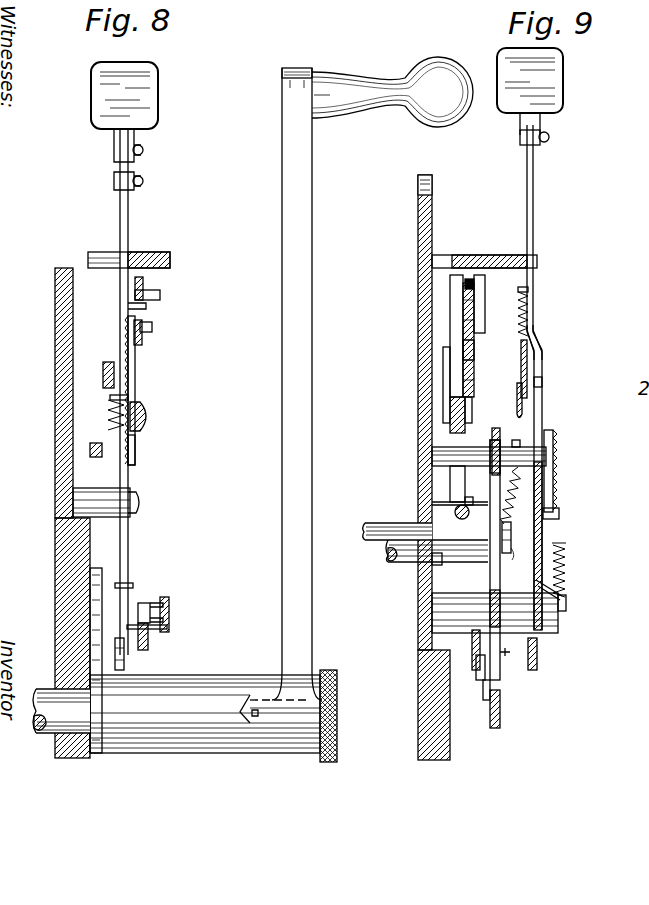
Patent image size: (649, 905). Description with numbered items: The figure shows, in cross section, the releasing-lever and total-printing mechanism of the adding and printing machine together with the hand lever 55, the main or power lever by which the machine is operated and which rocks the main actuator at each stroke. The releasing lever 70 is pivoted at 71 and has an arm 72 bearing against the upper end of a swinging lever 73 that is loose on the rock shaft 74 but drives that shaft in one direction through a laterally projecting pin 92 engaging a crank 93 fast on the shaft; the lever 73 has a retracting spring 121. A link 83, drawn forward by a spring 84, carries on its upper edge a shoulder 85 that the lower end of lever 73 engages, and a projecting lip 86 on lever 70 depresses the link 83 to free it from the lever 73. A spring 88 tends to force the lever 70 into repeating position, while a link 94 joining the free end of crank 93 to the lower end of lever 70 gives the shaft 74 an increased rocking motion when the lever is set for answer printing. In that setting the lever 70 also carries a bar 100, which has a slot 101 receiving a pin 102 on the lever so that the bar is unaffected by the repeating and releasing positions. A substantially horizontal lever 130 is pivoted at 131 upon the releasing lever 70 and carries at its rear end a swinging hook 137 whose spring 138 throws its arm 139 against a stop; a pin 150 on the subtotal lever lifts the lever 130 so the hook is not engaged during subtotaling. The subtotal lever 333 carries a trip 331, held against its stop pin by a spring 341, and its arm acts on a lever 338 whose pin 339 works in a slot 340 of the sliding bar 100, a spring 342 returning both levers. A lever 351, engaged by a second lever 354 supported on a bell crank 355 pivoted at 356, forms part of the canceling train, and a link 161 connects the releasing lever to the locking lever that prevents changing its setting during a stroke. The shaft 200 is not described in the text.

In FIG. 8, the hand lever 55 is at (372, 378).
In FIG. 8, the releasing lever 70 is at (129, 216).
In FIG. 8, the pivot 71 is at (142, 506).
In FIG. 9, the arm 72 is at (501, 442).
In FIG. 9, the swinging lever 73 is at (497, 482).
In FIG. 9, the rock shaft 74 is at (509, 548).
In FIG. 8, the link 83 is at (149, 648).
In FIG. 9, the link 83 is at (502, 715).
In FIG. 8, the spring 84 is at (145, 607).
In FIG. 9, the shoulder 85 is at (486, 700).
In FIG. 8, the projecting lip 86 is at (160, 631).
In FIG. 8, the spring 88 is at (131, 585).
In FIG. 9, the laterally projecting pin 92 is at (477, 606).
In FIG. 9, the crank 93 is at (485, 563).
In FIG. 8, the link 94 is at (117, 640).
In FIG. 9, the link 94 is at (479, 678).
In FIG. 8, the bar 100 is at (144, 278).
In FIG. 8, the slot 101 is at (147, 305).
In FIG. 8, the pin 102 is at (161, 296).
In FIG. 9, the retracting spring 121 is at (510, 654).
In FIG. 8, the lever 130 is at (137, 443).
In FIG. 8, the pivot 131 is at (150, 428).
In FIG. 9, the pivot 131 is at (517, 390).
In FIG. 9, the swinging hook 137 is at (541, 362).
In FIG. 9, the spring 138 is at (530, 300).
In FIG. 9, the arm 139 is at (541, 342).
In FIG. 9, the pin 150 is at (543, 390).
In FIG. 8, the link 161 is at (170, 612).
In FIG. 9, the link 161 is at (539, 660).
In FIG. 8, the shaft 200 is at (46, 736).
In FIG. 9, the trip 331 is at (560, 514).
In FIG. 9, the subtotal lever 333 is at (535, 175).
In FIG. 8, the lever 338 is at (137, 364).
In FIG. 9, the lever 338 is at (559, 490).
In FIG. 8, the pin 339 is at (153, 327).
In FIG. 8, the slot 340 is at (143, 338).
In FIG. 9, the spring 341 is at (550, 463).
In FIG. 9, the spring 342 is at (567, 554).
In FIG. 9, the lever 351 is at (471, 279).
In FIG. 8, the lever 354 is at (106, 362).
In FIG. 9, the lever 354 is at (470, 347).
In FIG. 9, the bell crank 355 is at (478, 308).
In FIG. 9, the pivot 356 is at (562, 611).